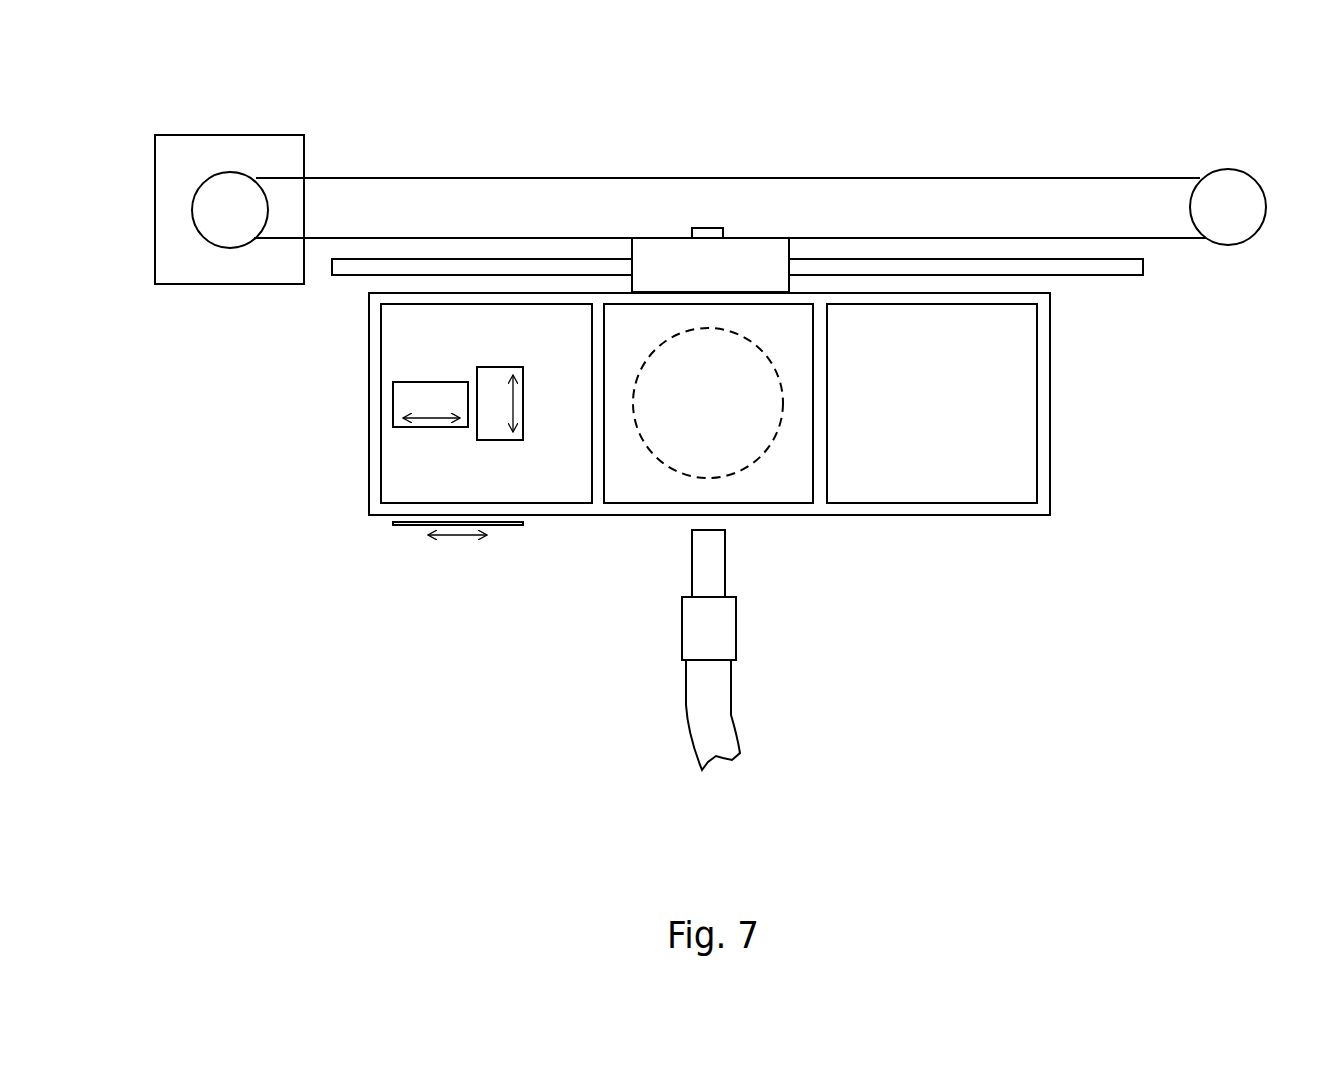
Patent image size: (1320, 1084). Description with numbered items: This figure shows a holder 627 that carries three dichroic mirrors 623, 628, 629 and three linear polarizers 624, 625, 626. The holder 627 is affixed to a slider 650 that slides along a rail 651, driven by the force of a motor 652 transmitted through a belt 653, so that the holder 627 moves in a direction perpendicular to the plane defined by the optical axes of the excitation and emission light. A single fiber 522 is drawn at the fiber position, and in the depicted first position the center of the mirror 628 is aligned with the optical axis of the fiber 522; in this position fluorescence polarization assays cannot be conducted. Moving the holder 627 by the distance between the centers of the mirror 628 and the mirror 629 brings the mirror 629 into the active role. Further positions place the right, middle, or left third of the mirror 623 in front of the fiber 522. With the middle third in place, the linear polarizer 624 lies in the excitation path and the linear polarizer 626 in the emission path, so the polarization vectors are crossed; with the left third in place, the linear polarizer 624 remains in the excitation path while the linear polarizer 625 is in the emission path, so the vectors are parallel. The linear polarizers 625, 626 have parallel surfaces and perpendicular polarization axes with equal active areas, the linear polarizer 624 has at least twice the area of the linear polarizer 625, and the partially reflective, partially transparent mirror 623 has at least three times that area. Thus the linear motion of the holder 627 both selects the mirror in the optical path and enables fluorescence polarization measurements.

The fiber 522 is at (736, 630).
The dichroic mirror 623 is at (452, 339).
The linear polarizer 624 is at (403, 525).
The linear polarizer 625 is at (393, 397).
The linear polarizer 626 is at (523, 440).
The holder 627 is at (1050, 447).
The dichroic mirror 628 is at (731, 434).
The dichroic mirror 629 is at (939, 419).
The slider 650 is at (753, 260).
The rail 651 is at (1132, 275).
The motor 652 is at (257, 134).
The belt 653 is at (582, 178).